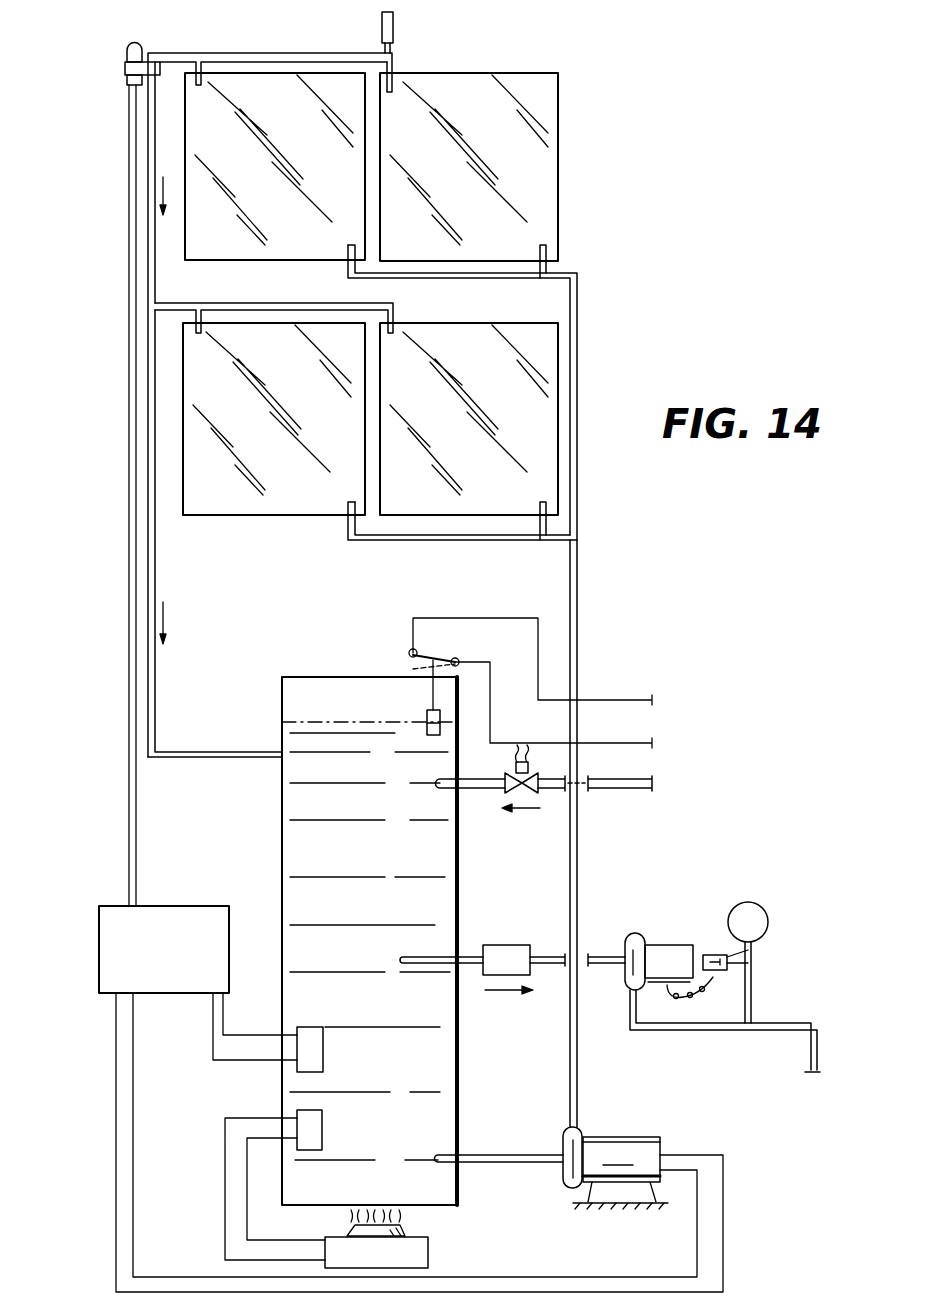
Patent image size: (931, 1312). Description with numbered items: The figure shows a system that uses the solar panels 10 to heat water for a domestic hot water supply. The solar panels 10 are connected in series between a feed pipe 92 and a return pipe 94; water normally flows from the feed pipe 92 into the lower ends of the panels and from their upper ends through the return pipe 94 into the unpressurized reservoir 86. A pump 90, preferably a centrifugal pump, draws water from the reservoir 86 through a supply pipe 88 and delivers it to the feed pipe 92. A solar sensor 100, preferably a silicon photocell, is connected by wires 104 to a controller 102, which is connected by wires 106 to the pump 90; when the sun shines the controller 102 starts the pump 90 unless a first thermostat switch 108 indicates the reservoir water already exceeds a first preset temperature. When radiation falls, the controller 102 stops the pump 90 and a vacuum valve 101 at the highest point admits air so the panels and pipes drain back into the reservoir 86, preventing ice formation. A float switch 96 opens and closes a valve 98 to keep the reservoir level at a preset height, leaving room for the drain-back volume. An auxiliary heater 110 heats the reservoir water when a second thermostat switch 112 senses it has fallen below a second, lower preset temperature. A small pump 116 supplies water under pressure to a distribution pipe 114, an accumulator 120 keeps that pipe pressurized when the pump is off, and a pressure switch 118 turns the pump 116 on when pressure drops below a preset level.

The solar panels 10 is at (370, 294).
The unpressurized reservoir 86 is at (282, 843).
The supply pipe 88 is at (518, 1163).
The pump 90 is at (637, 1135).
The feed pipe 92 is at (578, 1083).
The return pipe 94 is at (158, 566).
The float switch 96 is at (437, 660).
The valve 98 is at (528, 797).
The sensor 100 is at (127, 67).
The vacuum valve 101 is at (393, 38).
The controller 102 is at (100, 940).
The wires 104 is at (134, 792).
The wires 106 is at (134, 1178).
The first thermostat switch 108 is at (325, 1052).
The auxiliary heater 110 is at (418, 1253).
The second thermostat switch 112 is at (324, 1123).
The distribution pipe 114 is at (773, 1033).
The small pump 116 is at (663, 948).
The pressure switch 118 is at (748, 950).
The accumulator 120 is at (742, 902).